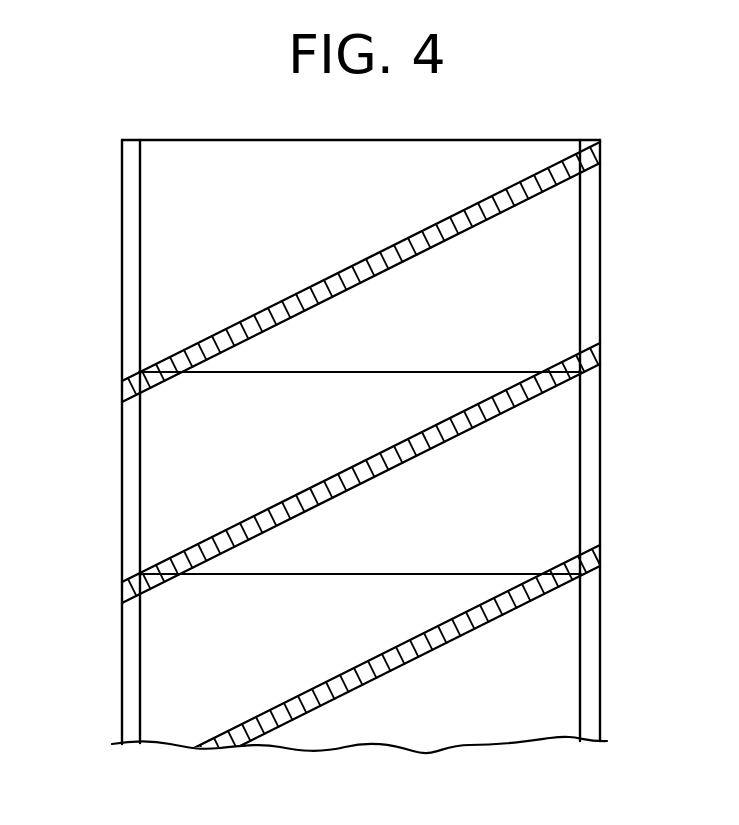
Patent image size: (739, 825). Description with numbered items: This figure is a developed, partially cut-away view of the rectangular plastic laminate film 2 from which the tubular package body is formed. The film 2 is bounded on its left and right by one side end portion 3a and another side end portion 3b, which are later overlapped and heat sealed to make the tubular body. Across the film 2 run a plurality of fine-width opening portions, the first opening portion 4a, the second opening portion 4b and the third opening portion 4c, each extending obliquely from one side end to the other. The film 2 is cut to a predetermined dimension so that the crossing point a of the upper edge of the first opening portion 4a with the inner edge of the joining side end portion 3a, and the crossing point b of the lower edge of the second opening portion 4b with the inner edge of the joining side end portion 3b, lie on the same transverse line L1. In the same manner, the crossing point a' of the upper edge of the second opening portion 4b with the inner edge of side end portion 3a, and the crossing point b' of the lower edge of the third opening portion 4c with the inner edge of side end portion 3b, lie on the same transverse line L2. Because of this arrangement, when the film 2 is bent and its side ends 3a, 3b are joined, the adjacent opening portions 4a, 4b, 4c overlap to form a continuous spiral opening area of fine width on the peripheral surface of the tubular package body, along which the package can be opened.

The plastic laminate film 2 is at (413, 733).
The one side end portion 3a is at (128, 502).
The another side end portion 3b is at (600, 510).
The first opening portion 4a is at (290, 297).
The second opening portion 4b is at (290, 498).
The third opening portion 4c is at (290, 700).
The transverse line L1 is at (382, 372).
The transverse line L2 is at (392, 574).
The crossing point a is at (157, 336).
The crossing point a' is at (159, 539).
The crossing point b is at (556, 411).
The crossing point b' is at (556, 614).